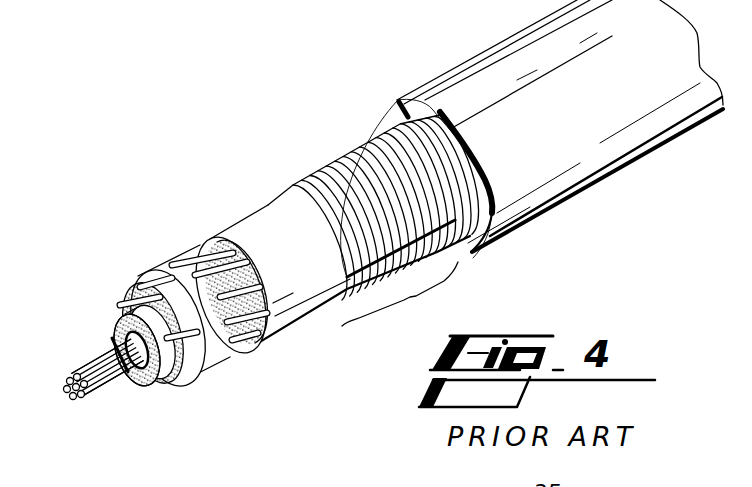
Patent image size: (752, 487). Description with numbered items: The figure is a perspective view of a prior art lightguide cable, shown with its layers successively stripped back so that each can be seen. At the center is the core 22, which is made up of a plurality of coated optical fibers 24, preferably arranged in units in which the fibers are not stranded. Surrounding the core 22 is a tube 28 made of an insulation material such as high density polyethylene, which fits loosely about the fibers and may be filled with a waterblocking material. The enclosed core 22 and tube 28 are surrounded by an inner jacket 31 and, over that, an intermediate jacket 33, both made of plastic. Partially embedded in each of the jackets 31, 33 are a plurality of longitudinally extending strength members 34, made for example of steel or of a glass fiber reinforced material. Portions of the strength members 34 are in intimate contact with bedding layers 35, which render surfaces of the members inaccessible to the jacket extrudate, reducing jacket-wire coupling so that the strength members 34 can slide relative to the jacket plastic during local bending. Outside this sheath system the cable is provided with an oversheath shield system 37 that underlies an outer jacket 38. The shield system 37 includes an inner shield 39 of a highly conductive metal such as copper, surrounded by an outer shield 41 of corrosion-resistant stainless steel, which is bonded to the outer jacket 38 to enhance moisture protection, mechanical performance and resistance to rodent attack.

The core 22 is at (101, 405).
The coated optical fibers 24 is at (82, 400).
The tube 28 is at (108, 330).
The inner jacket 31 is at (214, 380).
The intermediate jacket 33 is at (307, 313).
The strength members 34 is at (172, 266).
The bedding layers 35 is at (173, 382).
The oversheath shield system 37 is at (400, 305).
The outer jacket 38 is at (383, 112).
The inner shield 39 is at (296, 186).
The outer shield 41 is at (346, 144).